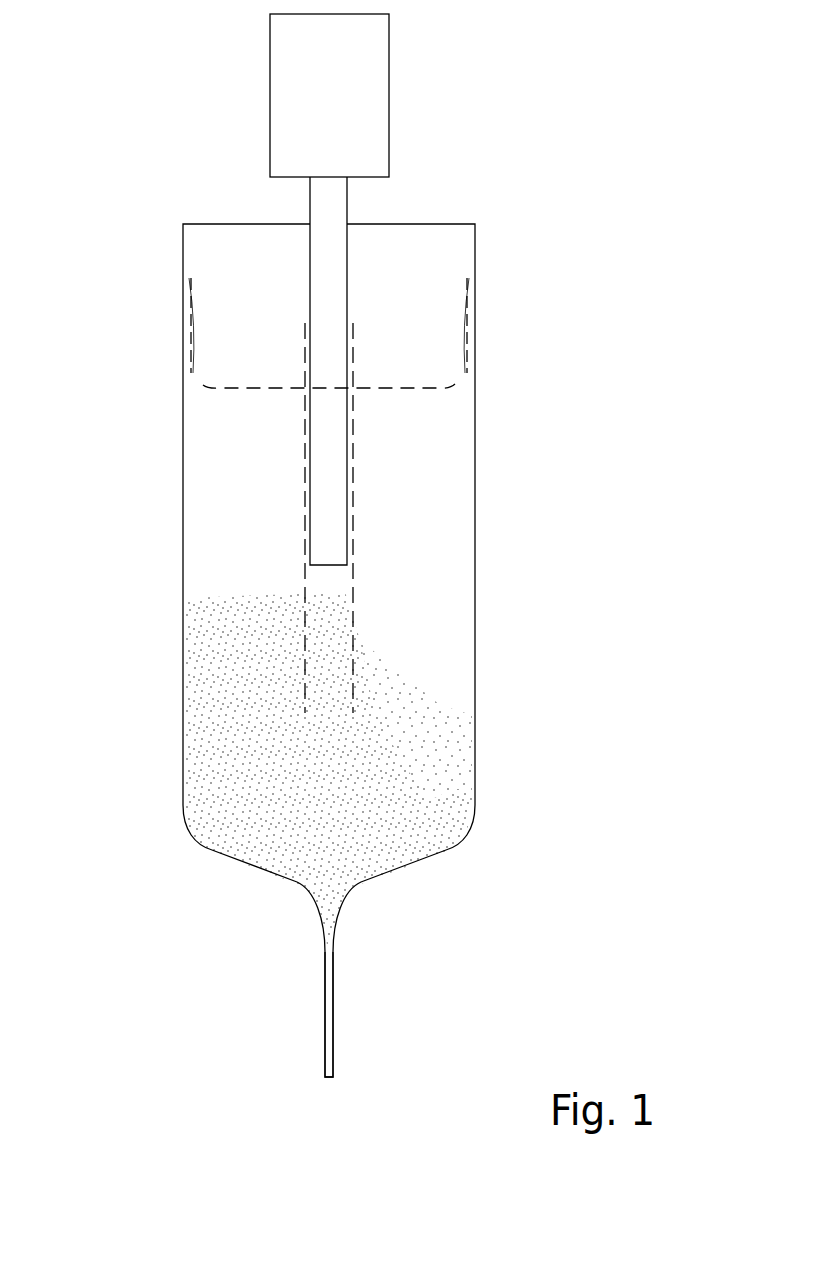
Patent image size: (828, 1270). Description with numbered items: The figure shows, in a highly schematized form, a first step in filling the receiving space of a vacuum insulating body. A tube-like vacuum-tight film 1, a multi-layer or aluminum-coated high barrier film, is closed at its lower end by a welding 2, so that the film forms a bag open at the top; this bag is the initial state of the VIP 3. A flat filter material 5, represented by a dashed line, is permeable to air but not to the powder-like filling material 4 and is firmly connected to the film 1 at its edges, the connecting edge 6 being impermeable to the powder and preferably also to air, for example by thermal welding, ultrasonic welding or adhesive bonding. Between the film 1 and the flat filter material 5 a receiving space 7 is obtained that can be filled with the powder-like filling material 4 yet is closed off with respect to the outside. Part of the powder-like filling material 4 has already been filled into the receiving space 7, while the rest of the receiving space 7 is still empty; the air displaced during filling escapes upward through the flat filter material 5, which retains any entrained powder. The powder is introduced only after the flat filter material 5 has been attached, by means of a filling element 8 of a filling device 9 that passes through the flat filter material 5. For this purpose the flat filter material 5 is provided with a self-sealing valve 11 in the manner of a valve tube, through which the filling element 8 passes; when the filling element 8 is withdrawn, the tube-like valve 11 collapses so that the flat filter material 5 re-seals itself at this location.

The vacuum-tight film 1 is at (183, 658).
The welding 2 is at (335, 1020).
The VIP 3 is at (525, 205).
The powder-like filling material 4 is at (218, 744).
The flat filter material 5 is at (403, 388).
The connecting edge 6 is at (183, 300).
The receiving space 7 is at (433, 651).
The filling element 8 is at (350, 453).
The filling device 9 is at (389, 72).
The self-sealing valve 11 is at (354, 580).